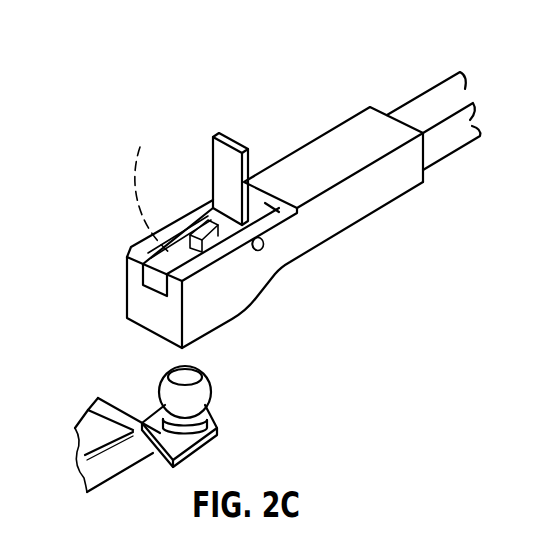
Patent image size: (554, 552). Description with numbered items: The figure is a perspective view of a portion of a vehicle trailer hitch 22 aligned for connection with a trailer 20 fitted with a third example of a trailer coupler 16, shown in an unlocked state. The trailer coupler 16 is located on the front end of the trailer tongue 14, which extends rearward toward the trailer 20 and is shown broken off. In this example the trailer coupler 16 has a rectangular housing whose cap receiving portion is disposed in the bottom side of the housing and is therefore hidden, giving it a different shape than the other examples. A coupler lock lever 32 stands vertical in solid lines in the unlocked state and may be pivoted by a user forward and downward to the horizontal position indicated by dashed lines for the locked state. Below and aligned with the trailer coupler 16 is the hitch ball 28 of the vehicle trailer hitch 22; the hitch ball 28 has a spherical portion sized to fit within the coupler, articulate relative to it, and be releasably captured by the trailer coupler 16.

The trailer 20 is at (131, 70).
The trailer tongue 14 is at (431, 99).
The trailer coupler 16 is at (332, 148).
The coupler lock lever 32 is at (224, 164).
The vehicle trailer hitch 22 is at (117, 458).
The hitch ball 28 is at (206, 399).